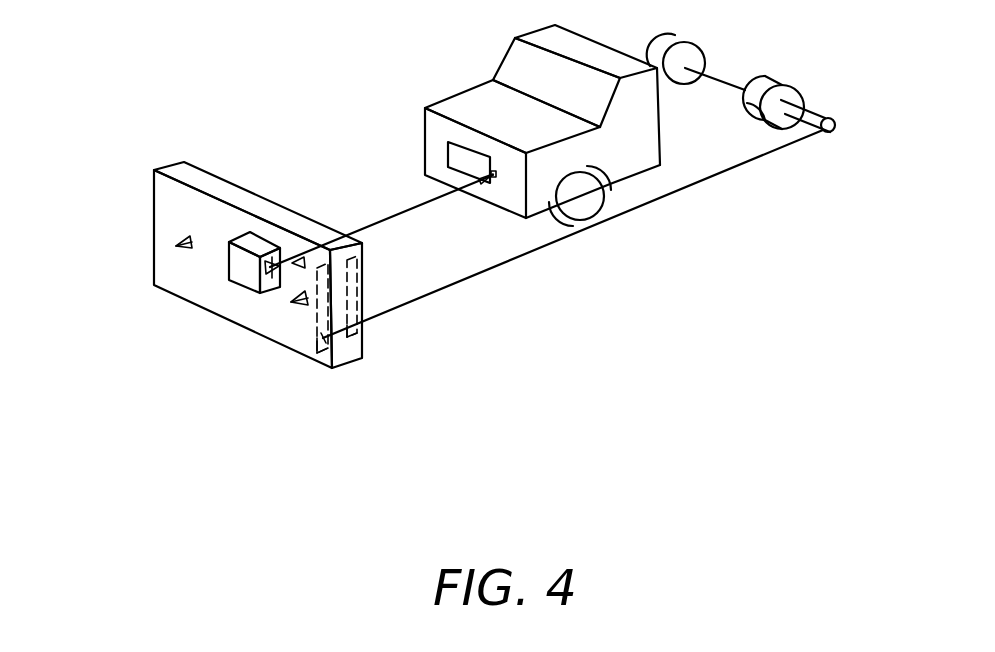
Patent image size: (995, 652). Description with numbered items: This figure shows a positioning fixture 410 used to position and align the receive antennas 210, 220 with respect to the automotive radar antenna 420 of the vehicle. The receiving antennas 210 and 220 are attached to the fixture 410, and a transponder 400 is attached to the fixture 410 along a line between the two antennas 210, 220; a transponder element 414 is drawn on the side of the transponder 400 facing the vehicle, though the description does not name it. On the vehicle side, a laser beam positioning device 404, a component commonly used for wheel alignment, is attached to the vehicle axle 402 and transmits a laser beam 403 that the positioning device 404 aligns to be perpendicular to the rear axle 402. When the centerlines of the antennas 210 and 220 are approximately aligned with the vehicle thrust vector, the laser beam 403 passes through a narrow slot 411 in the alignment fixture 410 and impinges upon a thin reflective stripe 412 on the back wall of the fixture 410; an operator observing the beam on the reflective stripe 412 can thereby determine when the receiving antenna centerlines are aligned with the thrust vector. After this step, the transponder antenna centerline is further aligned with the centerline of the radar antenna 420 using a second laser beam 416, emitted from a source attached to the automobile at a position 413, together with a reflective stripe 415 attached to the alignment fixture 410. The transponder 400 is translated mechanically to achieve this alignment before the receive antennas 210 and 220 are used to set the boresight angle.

The positioning fixture 410 is at (162, 198).
The receive antenna 210 is at (177, 245).
The receive antenna 220 is at (232, 365).
The transponder 400 is at (191, 299).
The reflective stripe 415 is at (203, 324).
The sensor aperture 414 is at (317, 229).
The thin reflective stripe 412 is at (260, 368).
The narrow slot 411 is at (398, 295).
The automotive radar antenna 420 is at (409, 142).
The position on automobile 413 is at (469, 208).
The second laser beam 416 is at (381, 206).
The vehicle axle 402 is at (727, 58).
The laser beam positioning device 404 is at (816, 104).
The laser beam 403 is at (573, 234).